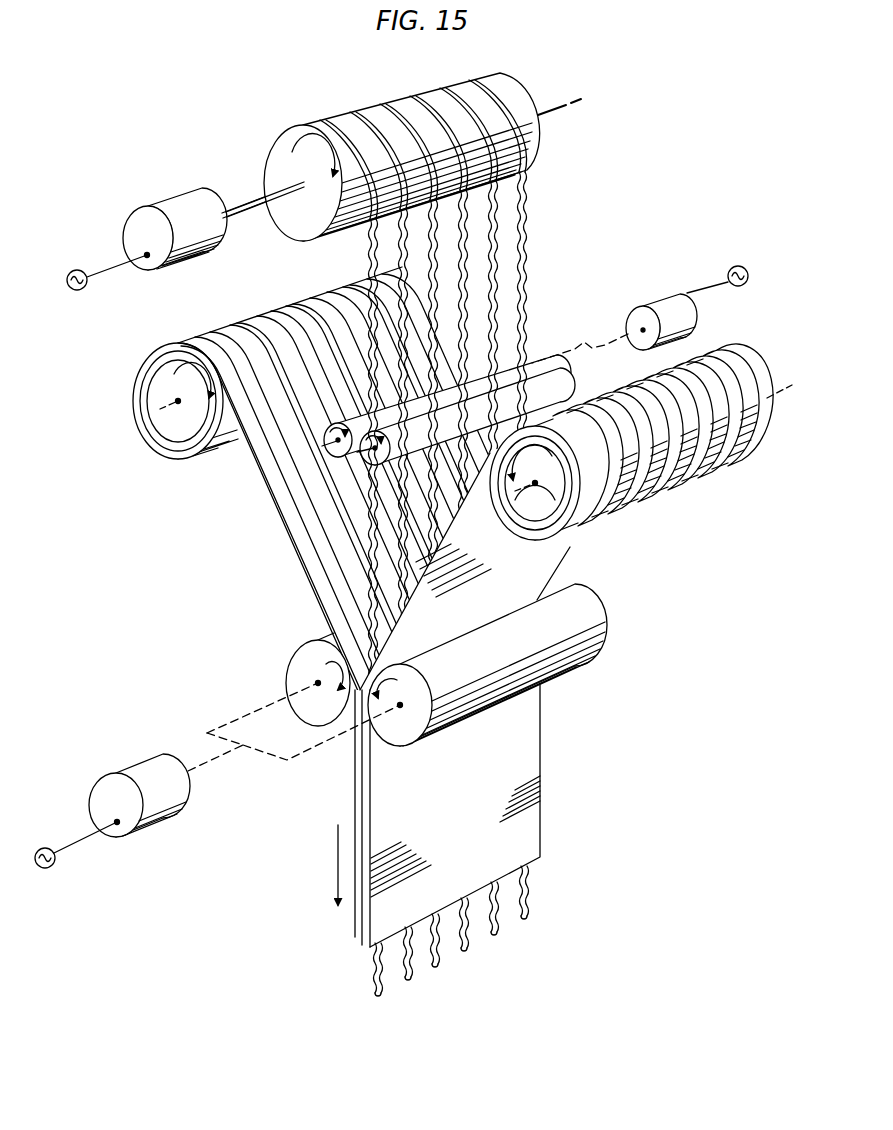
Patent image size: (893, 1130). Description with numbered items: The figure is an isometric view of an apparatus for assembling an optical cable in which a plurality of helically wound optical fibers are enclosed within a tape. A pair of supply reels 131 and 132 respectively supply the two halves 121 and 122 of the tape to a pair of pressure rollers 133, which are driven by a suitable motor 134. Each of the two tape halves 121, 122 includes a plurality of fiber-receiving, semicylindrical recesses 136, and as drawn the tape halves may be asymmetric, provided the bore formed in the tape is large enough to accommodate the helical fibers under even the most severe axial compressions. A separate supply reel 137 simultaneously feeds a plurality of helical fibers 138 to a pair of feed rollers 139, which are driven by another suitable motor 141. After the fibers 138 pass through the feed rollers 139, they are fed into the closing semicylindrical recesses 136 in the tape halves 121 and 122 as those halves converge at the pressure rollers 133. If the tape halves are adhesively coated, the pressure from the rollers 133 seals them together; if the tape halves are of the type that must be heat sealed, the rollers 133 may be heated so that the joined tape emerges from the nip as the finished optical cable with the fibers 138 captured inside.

The upper half of tape 121 is at (270, 493).
The lower half of tape 122 is at (556, 574).
The supply reel 131 is at (161, 448).
The supply reel 132 is at (697, 474).
The pressure rollers 133 is at (297, 662).
The motor 134 is at (133, 767).
The semicylindrical recesses 136 is at (387, 610).
The supply reel 137 is at (508, 80).
The helical fibers 138 is at (463, 257).
The feed rollers 139 is at (531, 362).
The motor 141 is at (663, 303).